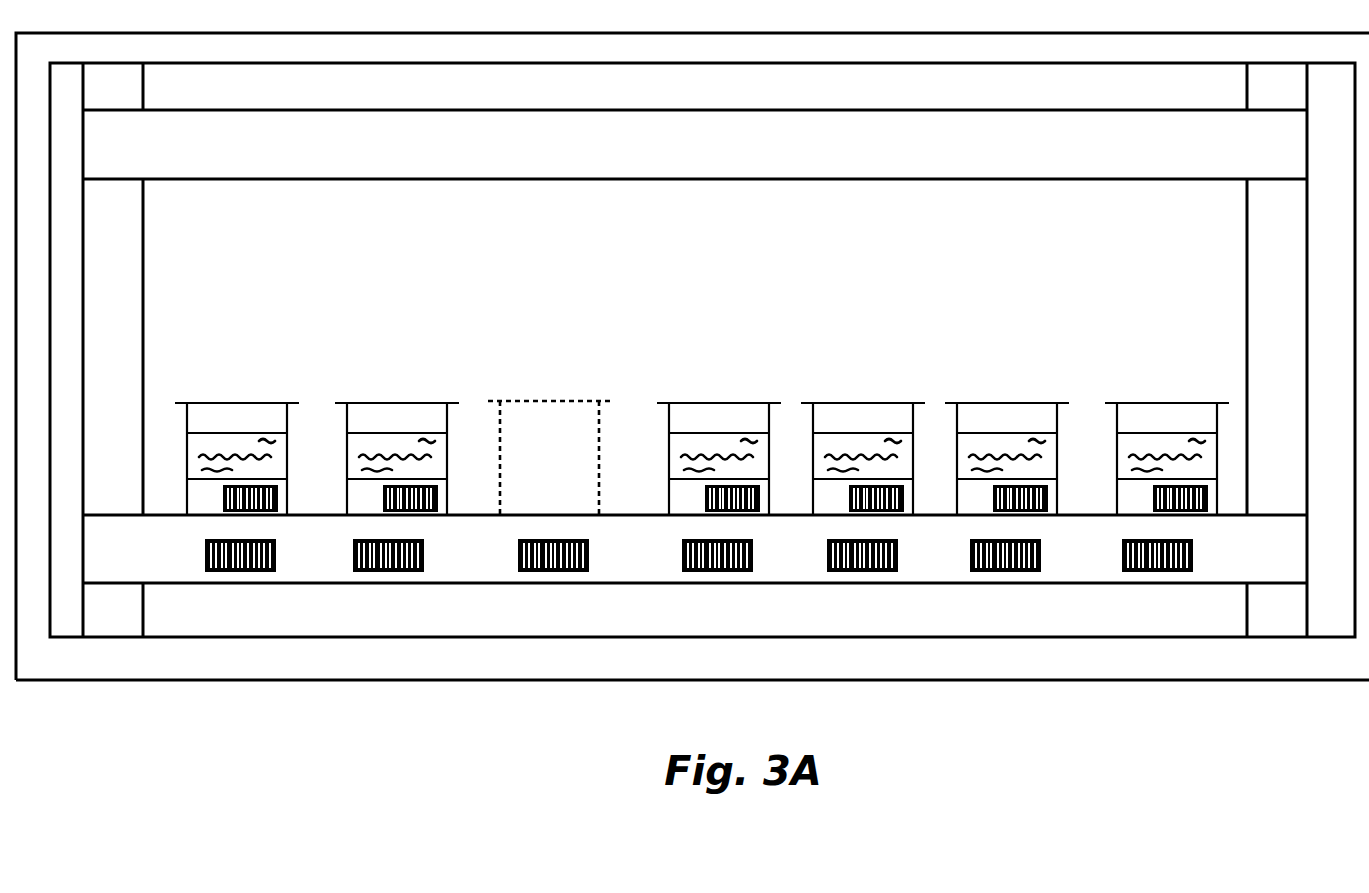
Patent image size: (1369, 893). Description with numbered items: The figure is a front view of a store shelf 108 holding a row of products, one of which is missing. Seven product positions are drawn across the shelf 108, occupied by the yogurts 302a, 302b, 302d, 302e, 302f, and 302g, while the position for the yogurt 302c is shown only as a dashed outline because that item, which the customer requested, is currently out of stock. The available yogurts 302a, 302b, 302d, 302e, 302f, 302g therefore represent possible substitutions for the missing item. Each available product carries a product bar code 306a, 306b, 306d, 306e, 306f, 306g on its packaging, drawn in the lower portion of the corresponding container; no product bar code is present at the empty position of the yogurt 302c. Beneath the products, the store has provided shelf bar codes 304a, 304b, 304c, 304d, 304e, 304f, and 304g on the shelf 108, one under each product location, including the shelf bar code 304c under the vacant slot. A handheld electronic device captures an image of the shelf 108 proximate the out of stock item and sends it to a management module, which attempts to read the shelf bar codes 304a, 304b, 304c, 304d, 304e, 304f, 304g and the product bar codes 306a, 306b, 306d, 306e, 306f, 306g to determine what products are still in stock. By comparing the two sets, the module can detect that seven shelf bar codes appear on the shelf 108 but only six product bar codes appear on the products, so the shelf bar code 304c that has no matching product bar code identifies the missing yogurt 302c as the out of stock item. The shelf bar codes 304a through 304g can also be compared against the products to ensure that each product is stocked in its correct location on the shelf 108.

The shelf 108 is at (658, 584).
The yogurt 302a is at (216, 428).
The yogurt 302b is at (376, 428).
The yogurt (out of stock item) 302c is at (528, 470).
The yogurt 302d is at (698, 428).
The yogurt 302e is at (842, 428).
The yogurt 302f is at (988, 428).
The yogurt 302g is at (1146, 428).
The shelf bar code 304a is at (248, 572).
The shelf bar code 304b is at (397, 572).
The shelf bar code 304c is at (560, 572).
The shelf bar code 304d is at (725, 572).
The shelf bar code 304e is at (868, 572).
The shelf bar code 304f is at (1012, 572).
The shelf bar code 304g is at (1162, 572).
The product bar code 306a is at (263, 512).
The product bar code 306b is at (420, 512).
The product bar code 306d is at (738, 512).
The product bar code 306e is at (882, 512).
The product bar code 306f is at (1026, 512).
The product bar code 306g is at (1188, 512).